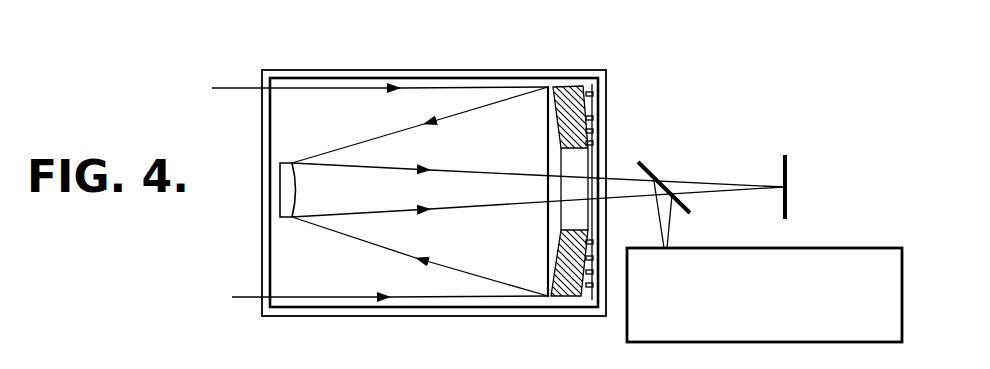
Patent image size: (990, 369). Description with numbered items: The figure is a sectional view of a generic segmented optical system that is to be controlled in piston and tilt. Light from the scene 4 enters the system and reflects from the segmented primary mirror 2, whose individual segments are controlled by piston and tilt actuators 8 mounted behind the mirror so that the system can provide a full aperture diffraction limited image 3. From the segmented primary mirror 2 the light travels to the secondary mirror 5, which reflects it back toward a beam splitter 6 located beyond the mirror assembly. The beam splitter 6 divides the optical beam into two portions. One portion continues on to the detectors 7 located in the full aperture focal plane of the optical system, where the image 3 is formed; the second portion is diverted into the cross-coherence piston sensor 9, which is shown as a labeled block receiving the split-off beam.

The segmented primary mirror 2 is at (575, 300).
The full aperture diffraction limited image 3 is at (781, 184).
The light from the scene 4 is at (247, 88).
The secondary mirror 5 is at (290, 163).
The beam splitter 6 is at (665, 169).
The detectors 7 is at (792, 210).
The piston and tilt actuators 8 is at (589, 94).
The cross-coherence piston sensor 9 is at (903, 320).